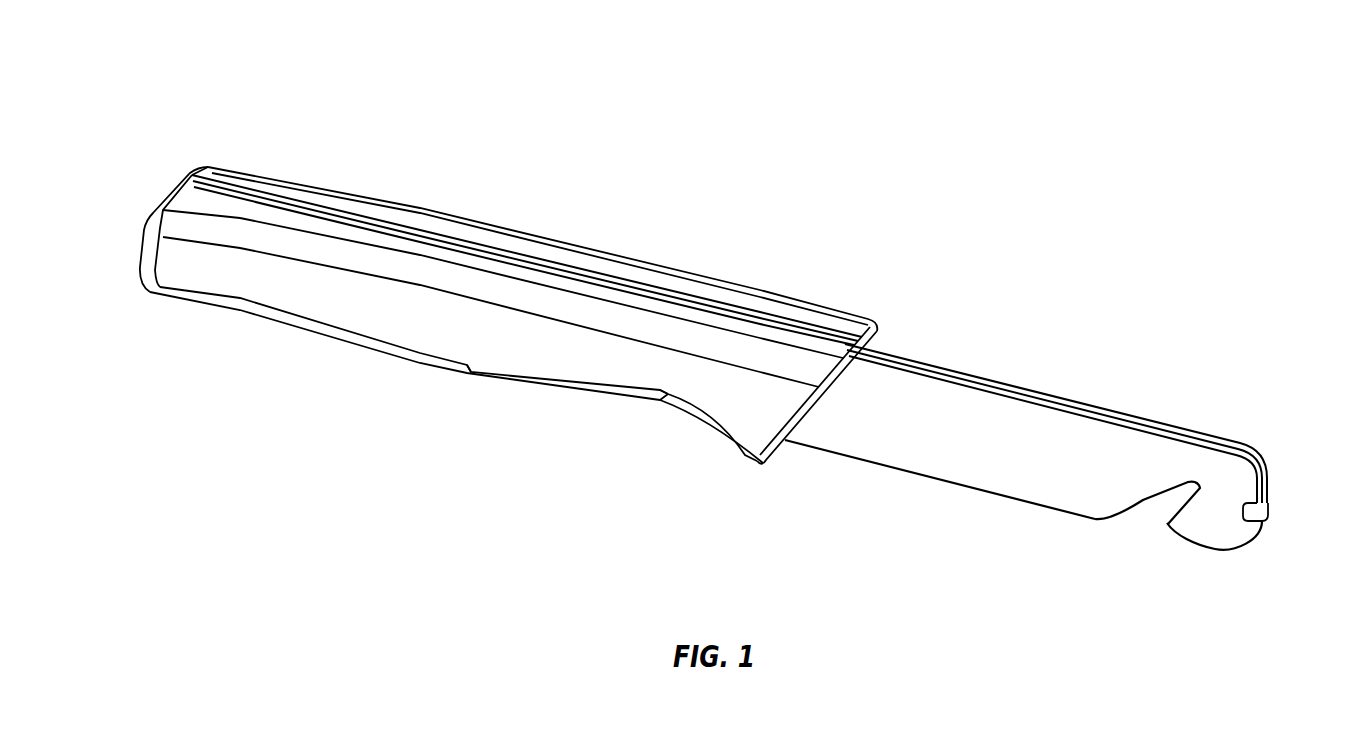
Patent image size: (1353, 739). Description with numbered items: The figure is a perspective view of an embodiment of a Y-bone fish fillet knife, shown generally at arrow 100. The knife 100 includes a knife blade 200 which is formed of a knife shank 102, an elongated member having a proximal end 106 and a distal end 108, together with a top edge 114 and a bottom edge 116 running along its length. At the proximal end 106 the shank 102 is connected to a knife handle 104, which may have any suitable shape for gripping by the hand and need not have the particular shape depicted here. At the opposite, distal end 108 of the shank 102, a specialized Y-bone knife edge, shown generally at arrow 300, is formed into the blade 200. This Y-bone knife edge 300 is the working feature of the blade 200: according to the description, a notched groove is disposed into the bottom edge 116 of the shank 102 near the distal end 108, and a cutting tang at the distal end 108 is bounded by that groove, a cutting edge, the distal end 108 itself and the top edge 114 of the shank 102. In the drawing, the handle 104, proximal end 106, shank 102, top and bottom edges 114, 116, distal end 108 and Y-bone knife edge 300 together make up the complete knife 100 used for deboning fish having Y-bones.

The Y-bone fish fillet knife 100 is at (718, 386).
The knife shank 102 is at (1045, 499).
The knife blade 200 is at (1045, 499).
The knife handle 104 is at (504, 280).
The proximal end 106 is at (178, 190).
The distal end 108 is at (1268, 488).
The top edge 114 is at (1013, 380).
The bottom edge 116 is at (900, 477).
The Y-bone knife edge 300 is at (1180, 583).